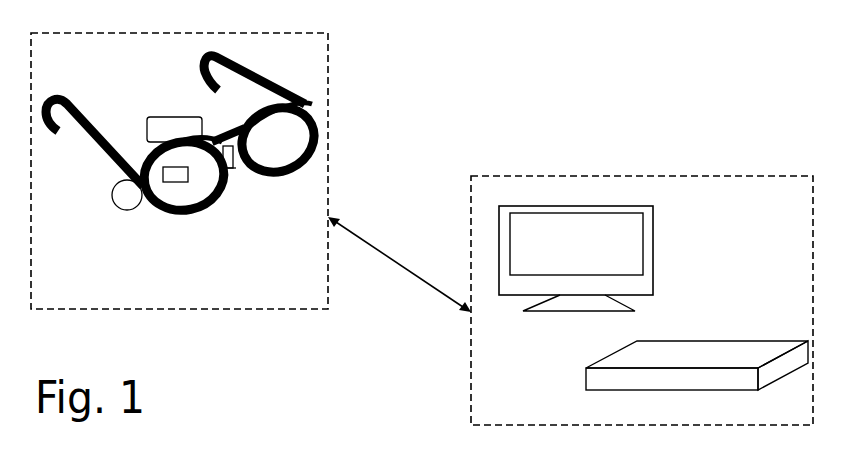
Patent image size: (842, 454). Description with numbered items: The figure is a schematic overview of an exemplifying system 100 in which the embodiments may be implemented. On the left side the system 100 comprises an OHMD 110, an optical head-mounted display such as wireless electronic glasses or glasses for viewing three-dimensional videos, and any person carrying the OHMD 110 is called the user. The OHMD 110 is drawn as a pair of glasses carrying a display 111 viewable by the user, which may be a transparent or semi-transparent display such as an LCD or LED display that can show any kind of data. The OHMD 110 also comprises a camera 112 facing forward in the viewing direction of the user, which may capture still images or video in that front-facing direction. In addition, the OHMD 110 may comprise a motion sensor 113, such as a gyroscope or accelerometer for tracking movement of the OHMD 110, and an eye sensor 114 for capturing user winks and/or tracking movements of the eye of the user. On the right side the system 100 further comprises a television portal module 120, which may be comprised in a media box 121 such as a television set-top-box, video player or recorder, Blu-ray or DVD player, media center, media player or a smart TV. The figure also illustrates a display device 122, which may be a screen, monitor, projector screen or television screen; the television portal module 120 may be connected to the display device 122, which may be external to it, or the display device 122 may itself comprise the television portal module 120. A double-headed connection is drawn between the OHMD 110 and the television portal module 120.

The system 100 is at (509, 107).
The OHMD 110 is at (179, 171).
The display 111 is at (177, 182).
The camera 112 is at (130, 210).
The motion sensor 113 is at (232, 173).
The eye sensor 114 is at (190, 117).
The television portal module 120 is at (642, 300).
The media box 121 is at (697, 344).
The display device 122 is at (652, 213).